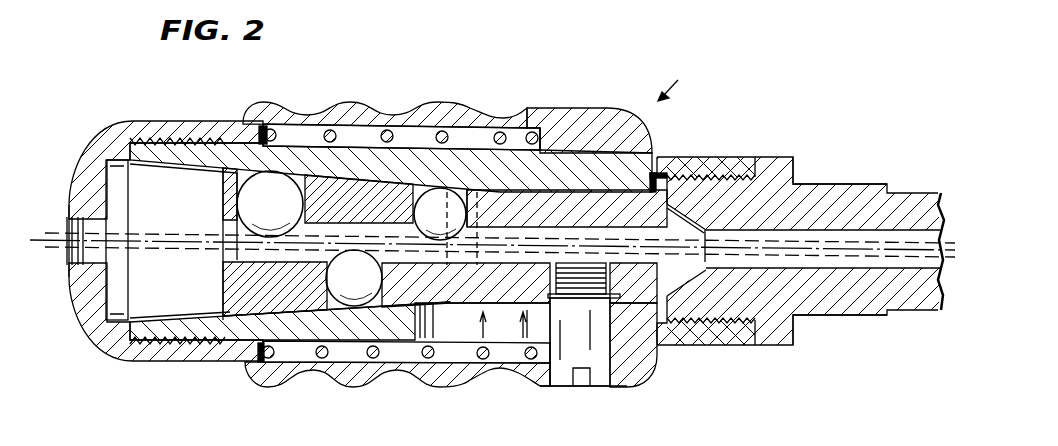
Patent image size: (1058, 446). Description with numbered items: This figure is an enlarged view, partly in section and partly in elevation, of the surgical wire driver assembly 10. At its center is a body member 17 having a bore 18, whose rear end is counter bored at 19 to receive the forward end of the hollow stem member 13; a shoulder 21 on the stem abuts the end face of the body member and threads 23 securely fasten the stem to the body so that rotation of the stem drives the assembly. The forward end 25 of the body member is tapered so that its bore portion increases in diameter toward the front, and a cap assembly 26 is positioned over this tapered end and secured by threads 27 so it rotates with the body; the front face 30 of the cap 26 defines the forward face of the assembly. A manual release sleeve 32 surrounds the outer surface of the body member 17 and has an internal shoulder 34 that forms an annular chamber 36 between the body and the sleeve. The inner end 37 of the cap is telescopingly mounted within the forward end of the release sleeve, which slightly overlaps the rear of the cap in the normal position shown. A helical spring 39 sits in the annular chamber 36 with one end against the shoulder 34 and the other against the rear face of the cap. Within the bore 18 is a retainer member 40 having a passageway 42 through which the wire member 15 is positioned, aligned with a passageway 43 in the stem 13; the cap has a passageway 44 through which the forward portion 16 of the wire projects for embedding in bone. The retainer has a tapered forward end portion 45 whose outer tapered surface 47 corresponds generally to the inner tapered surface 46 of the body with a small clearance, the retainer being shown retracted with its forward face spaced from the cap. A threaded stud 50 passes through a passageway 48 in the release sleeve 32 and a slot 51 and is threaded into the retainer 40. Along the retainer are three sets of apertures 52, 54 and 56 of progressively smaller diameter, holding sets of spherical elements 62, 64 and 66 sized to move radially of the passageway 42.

The wire driver assembly 10 is at (675, 81).
The stem member 13 is at (838, 308).
The wire member 15 is at (910, 259).
The forward portion of the wire 16 is at (60, 232).
The body member 17 is at (535, 127).
The bore 18 is at (588, 197).
The counter bore 19 is at (740, 158).
The shoulder 21 is at (772, 156).
The threads 23 is at (718, 323).
The forward end of the body member 25 is at (307, 157).
The cap assembly 26 is at (104, 125).
The threads 27 is at (162, 139).
The front face 30 is at (70, 198).
The manual release sleeve 32 is at (590, 105).
The internal shoulder 34 is at (543, 363).
The annular chamber 36 is at (412, 138).
The inner end of the cap assembly 37 is at (277, 127).
The helical spring 39 is at (377, 133).
The retainer member 40 is at (512, 165).
The passageway 42 is at (663, 174).
The passageway 43 is at (787, 235).
The passageway 44 is at (77, 253).
The forward end portion of the retainer 45 is at (228, 277).
The inner tapered surface 46 is at (167, 322).
The outer tapered surface 47 is at (225, 322).
The passageway 48 is at (608, 370).
The threaded stud 50 is at (578, 357).
The slot 51 is at (453, 330).
The apertures 52 is at (238, 194).
The apertures 54 is at (330, 307).
The apertures 56 is at (487, 200).
The spherical elements 62 is at (277, 222).
The spherical elements 64 is at (362, 290).
The spherical elements 66 is at (442, 233).